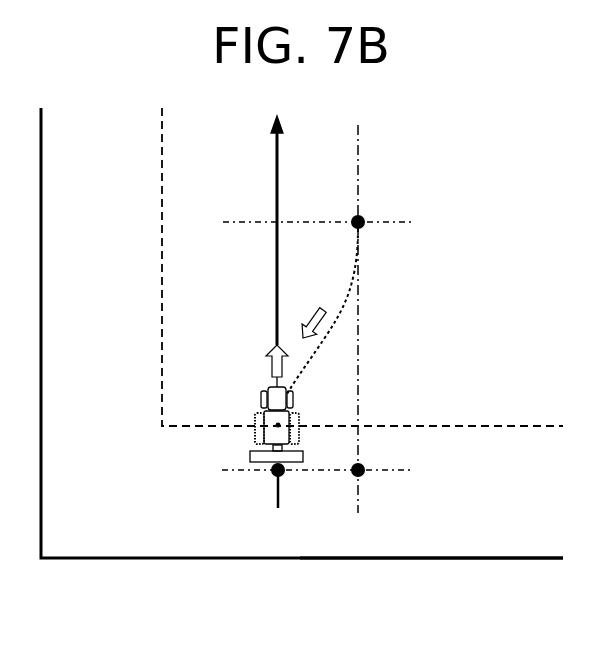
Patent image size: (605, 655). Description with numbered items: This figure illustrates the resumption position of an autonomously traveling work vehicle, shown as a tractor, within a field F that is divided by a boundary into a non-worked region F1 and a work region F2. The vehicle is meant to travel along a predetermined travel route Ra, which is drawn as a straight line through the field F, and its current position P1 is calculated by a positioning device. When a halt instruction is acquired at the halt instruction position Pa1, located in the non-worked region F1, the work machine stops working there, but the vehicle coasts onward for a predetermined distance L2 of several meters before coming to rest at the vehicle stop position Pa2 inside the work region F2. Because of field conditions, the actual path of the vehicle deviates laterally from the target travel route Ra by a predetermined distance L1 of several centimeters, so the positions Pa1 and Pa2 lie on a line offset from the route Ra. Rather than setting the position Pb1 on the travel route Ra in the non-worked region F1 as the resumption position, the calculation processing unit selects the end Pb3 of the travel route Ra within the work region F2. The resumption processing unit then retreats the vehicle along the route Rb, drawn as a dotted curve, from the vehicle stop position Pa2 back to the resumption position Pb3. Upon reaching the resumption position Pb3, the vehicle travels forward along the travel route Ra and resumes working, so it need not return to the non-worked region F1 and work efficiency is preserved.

The field F is at (138, 560).
The non-worked region F1 is at (495, 540).
The work region F2 is at (519, 410).
The travel route Ra is at (276, 190).
The route Rb is at (340, 316).
The halt instruction position Pa1 is at (364, 478).
The vehicle stop position Pa2 is at (364, 217).
The position on the travel route in the non-worked region Pb1 is at (272, 476).
The current position P1 is at (274, 426).
The resumption position Pb3 is at (224, 448).
The predetermined lateral distance L1 is at (356, 155).
The predetermined coasting distance L2 is at (232, 224).